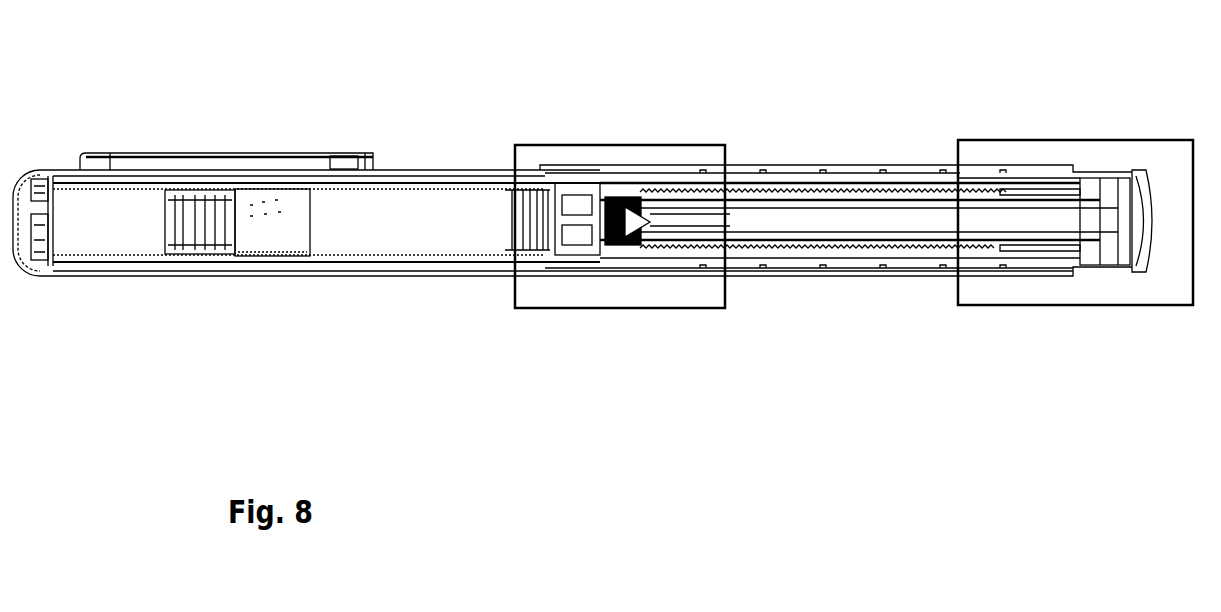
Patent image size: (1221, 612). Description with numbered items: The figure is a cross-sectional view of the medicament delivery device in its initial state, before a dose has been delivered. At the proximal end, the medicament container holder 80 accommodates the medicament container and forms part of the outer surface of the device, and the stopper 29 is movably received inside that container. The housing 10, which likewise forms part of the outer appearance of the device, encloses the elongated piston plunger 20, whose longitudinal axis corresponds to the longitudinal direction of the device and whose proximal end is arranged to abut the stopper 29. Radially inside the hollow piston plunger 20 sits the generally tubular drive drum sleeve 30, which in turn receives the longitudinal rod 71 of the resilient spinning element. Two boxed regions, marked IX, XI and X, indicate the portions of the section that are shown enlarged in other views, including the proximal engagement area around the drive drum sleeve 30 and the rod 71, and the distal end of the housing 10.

The housing 10 is at (812, 165).
The piston plunger 20 is at (1003, 178).
The stopper 29 is at (497, 257).
The drive drum sleeve 30 is at (862, 247).
The longitudinal rod 71 is at (897, 217).
The medicament container holder 80 is at (343, 242).
The detail region of FIGS. 9 and 11 IX, XI is at (560, 145).
The detail region of FIG. 10 X is at (1137, 140).